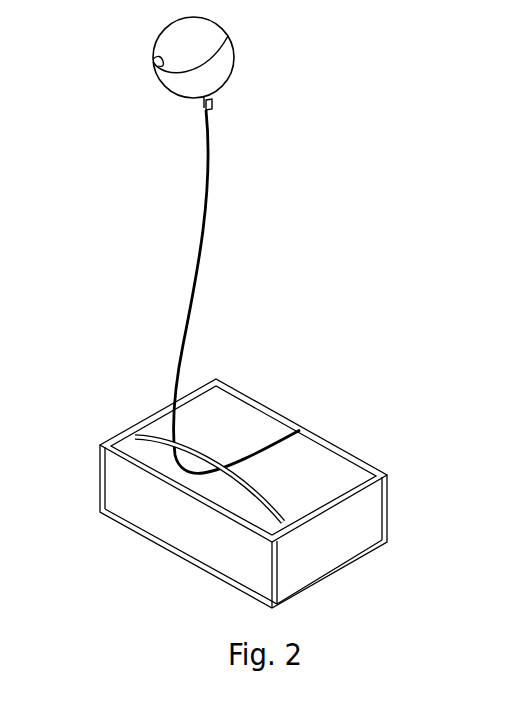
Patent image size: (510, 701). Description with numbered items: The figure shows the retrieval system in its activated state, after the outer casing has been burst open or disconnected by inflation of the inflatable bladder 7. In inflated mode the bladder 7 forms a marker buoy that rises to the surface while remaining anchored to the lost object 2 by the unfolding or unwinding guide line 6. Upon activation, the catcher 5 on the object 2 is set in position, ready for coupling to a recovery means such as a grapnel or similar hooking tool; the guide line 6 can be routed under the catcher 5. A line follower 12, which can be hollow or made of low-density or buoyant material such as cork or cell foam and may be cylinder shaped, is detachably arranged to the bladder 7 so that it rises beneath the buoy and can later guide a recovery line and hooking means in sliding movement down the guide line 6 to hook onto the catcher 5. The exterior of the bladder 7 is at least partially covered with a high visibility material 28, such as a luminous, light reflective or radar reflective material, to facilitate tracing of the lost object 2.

The object 2 is at (336, 446).
The catcher 5 is at (266, 515).
The guide line 6 is at (200, 281).
The inflatable bladder 7 is at (216, 82).
The line follower 12 is at (200, 110).
The high visibility material 28 is at (152, 60).